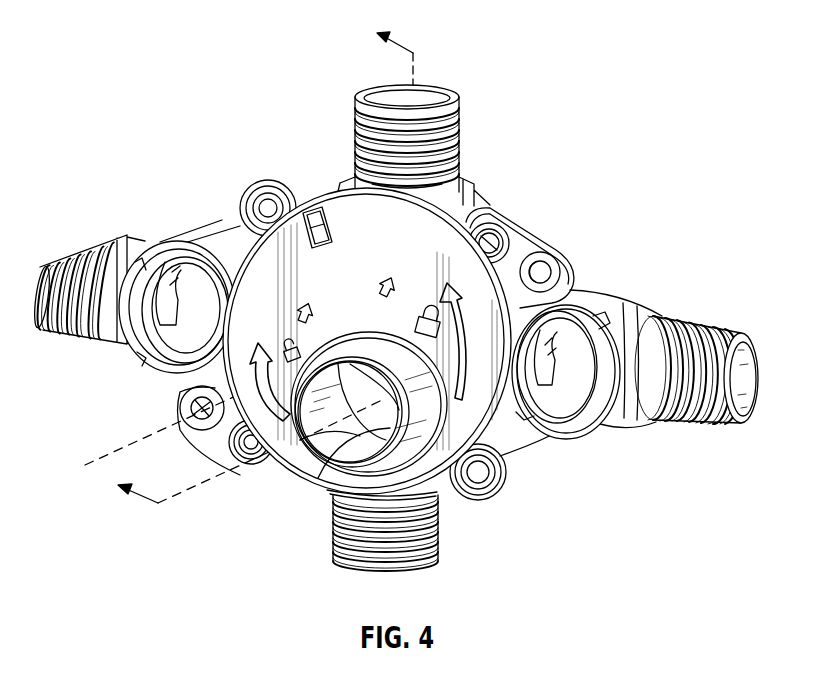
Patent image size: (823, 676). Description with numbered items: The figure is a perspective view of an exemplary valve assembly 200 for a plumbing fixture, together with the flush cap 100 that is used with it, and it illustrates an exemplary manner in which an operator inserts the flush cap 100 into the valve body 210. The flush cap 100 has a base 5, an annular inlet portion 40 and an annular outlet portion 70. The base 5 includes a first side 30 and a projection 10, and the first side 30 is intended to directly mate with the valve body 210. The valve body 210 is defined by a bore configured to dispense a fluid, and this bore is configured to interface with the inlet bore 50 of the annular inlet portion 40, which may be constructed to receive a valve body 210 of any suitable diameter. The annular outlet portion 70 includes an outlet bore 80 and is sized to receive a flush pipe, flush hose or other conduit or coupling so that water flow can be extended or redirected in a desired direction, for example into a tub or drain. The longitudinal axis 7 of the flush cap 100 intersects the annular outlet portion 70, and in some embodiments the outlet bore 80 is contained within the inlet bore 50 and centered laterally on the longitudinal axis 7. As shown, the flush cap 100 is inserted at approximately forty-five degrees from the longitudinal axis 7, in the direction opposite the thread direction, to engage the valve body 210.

The base 5 is at (222, 322).
The longitudinal axis 7 is at (145, 437).
The projection 10 is at (323, 223).
The first side 30 is at (327, 200).
The annular inlet portion 40 is at (340, 469).
The inlet bore 50 is at (392, 405).
The annular outlet portion 70 is at (471, 489).
The outlet bore 80 is at (380, 403).
The flush cap 100 is at (508, 128).
The valve assembly 200 is at (644, 96).
The valve body 210 is at (719, 326).